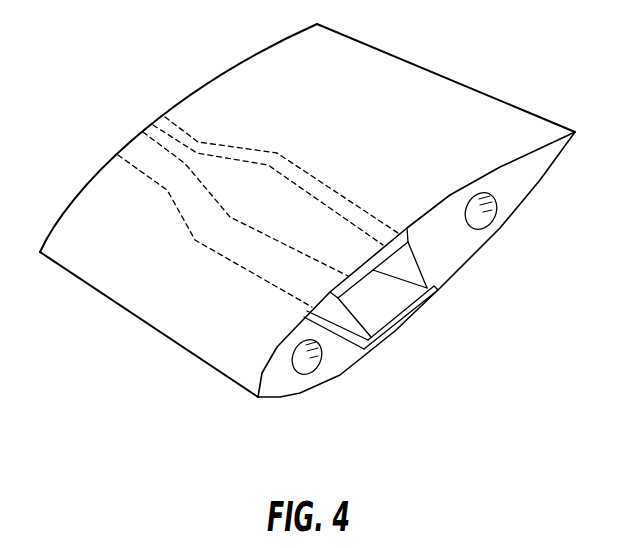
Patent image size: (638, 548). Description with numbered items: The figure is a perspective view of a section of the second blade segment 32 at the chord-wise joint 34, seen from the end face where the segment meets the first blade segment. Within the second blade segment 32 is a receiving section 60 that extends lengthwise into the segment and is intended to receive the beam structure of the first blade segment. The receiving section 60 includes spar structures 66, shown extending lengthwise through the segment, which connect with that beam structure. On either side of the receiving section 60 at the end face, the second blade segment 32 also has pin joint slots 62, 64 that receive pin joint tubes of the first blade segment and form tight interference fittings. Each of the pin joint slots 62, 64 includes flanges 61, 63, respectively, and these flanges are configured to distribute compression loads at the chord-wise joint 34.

The second blade segment 32 is at (403, 68).
The chord-wise joint 34 is at (273, 386).
The receiving section 60 is at (397, 304).
The flanges 61 is at (300, 343).
The pin joint slot 62 is at (322, 358).
The flanges 63 is at (476, 196).
The pin joint slot 64 is at (485, 218).
The spar structures 66 is at (313, 176).